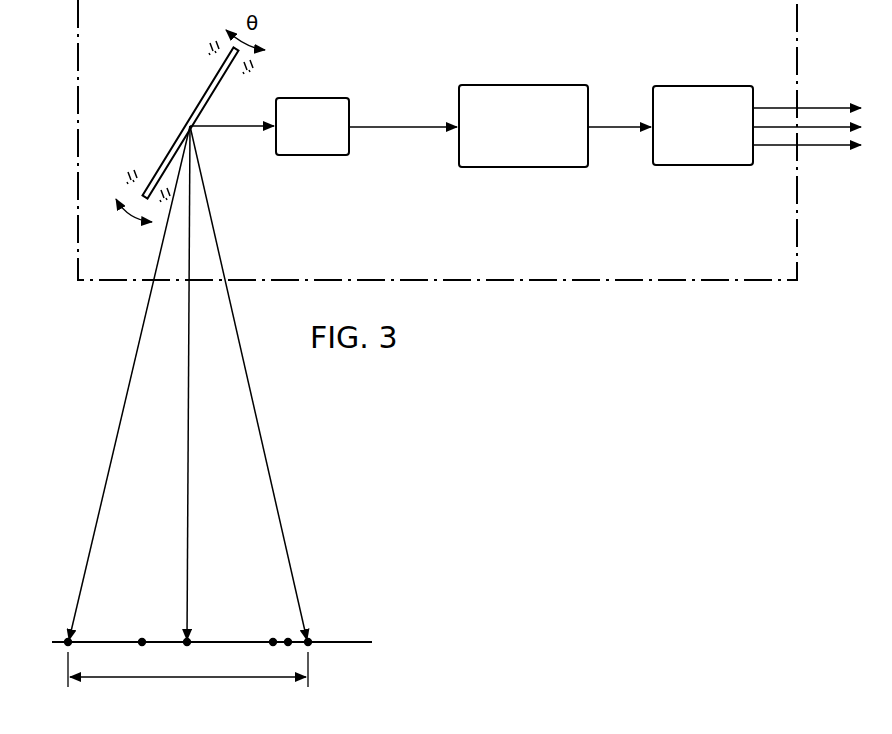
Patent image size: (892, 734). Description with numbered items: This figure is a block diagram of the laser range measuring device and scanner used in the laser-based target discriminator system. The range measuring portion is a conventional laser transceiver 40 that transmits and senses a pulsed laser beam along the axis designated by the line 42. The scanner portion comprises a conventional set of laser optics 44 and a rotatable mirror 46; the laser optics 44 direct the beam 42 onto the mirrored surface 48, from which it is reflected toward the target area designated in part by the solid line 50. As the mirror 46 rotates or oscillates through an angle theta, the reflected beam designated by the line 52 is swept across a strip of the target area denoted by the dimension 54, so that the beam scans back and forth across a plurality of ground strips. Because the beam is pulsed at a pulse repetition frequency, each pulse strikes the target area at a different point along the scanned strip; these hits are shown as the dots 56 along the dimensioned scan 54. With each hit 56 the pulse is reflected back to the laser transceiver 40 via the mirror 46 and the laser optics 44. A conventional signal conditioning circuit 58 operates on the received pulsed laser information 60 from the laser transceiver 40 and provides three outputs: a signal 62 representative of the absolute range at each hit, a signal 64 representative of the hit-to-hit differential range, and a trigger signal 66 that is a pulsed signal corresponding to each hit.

The laser transceiver 40 is at (494, 85).
The laser beam axis line 42 is at (390, 126).
The laser optics 44 is at (307, 97).
The rotatable mirror 46 is at (172, 150).
The mirrored surface 48 is at (215, 96).
The target area line 50 is at (364, 641).
The scanned laser beam line 52 is at (232, 130).
The scan strip dimension 54 is at (268, 678).
The target area hits 56 is at (187, 640).
The signal conditioning circuit 58 is at (697, 85).
The received pulsed laser information 60 is at (613, 126).
The absolute range signal 62 is at (830, 107).
The hit-to-hit differential range signal 64 is at (774, 126).
The trigger signal 66 is at (818, 146).